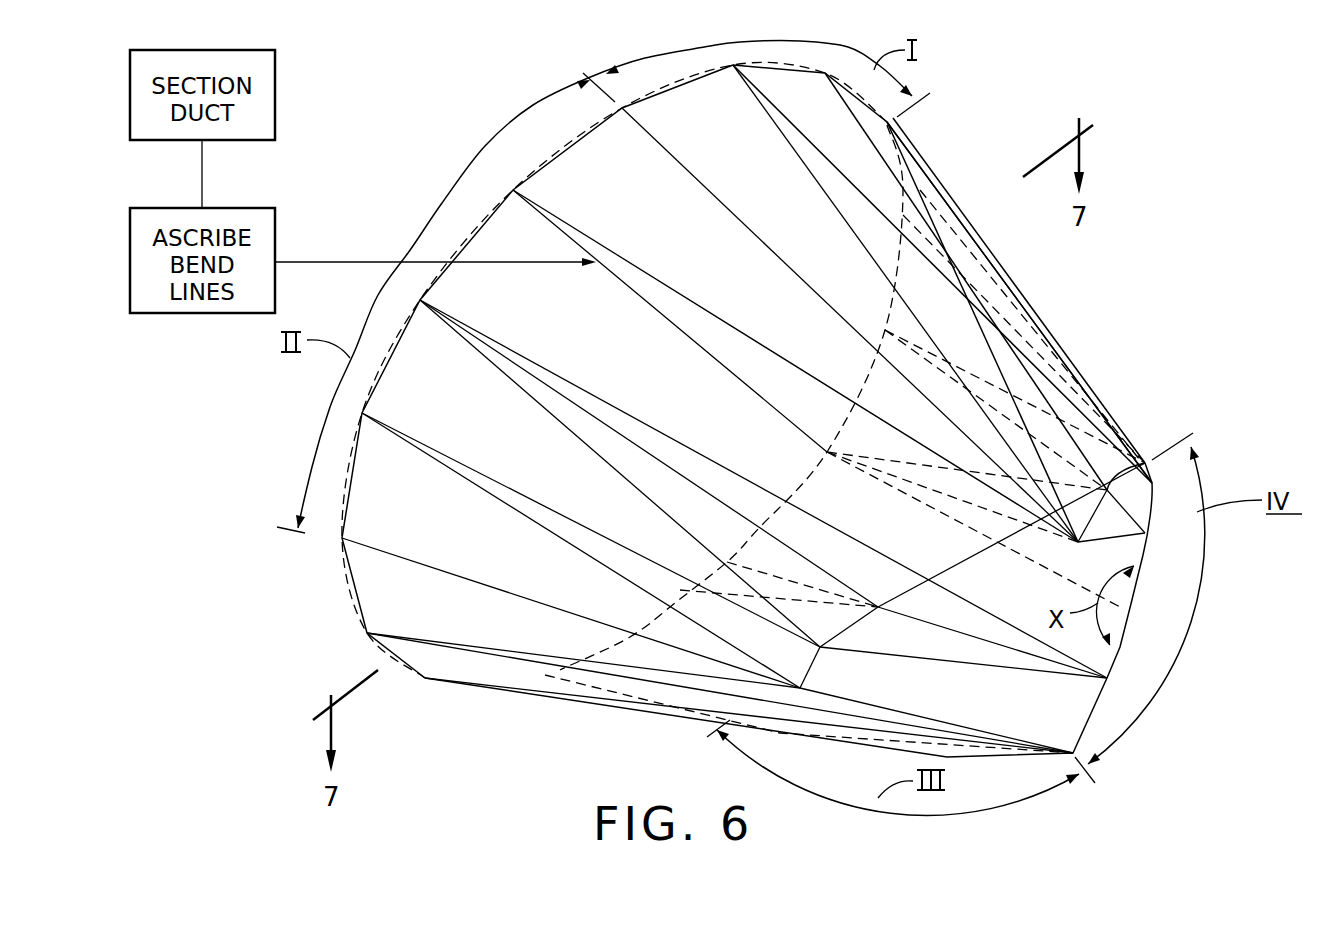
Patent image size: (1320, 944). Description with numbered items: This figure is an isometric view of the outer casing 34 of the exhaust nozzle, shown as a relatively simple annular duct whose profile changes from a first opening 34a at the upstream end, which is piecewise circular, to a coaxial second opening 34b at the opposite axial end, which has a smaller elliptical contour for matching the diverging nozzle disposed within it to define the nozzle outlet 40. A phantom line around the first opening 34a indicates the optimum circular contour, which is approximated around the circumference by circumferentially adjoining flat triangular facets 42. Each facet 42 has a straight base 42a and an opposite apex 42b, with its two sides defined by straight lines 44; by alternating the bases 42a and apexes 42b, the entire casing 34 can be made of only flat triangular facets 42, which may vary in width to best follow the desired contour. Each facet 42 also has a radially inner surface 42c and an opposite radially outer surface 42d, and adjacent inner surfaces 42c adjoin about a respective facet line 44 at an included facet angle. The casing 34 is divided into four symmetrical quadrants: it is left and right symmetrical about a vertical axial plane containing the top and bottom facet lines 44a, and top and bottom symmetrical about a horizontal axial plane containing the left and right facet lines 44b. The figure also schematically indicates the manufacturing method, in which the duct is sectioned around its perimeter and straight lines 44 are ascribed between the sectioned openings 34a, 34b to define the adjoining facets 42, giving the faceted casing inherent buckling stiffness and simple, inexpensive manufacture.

The outer casing 34 is at (967, 150).
The first opening 34a is at (347, 490).
The second opening 34b is at (1145, 556).
The nozzle outlet 40 is at (1088, 714).
The facets 42 is at (660, 373).
The straight base 42a is at (920, 587).
The apex 42b is at (514, 192).
The radially inner surface 42c is at (1105, 667).
The radially outer surface 42d is at (980, 557).
The straight lines 44 is at (703, 347).
The top and bottom facet lines 44a is at (725, 210).
The left and right facet lines 44b is at (403, 558).